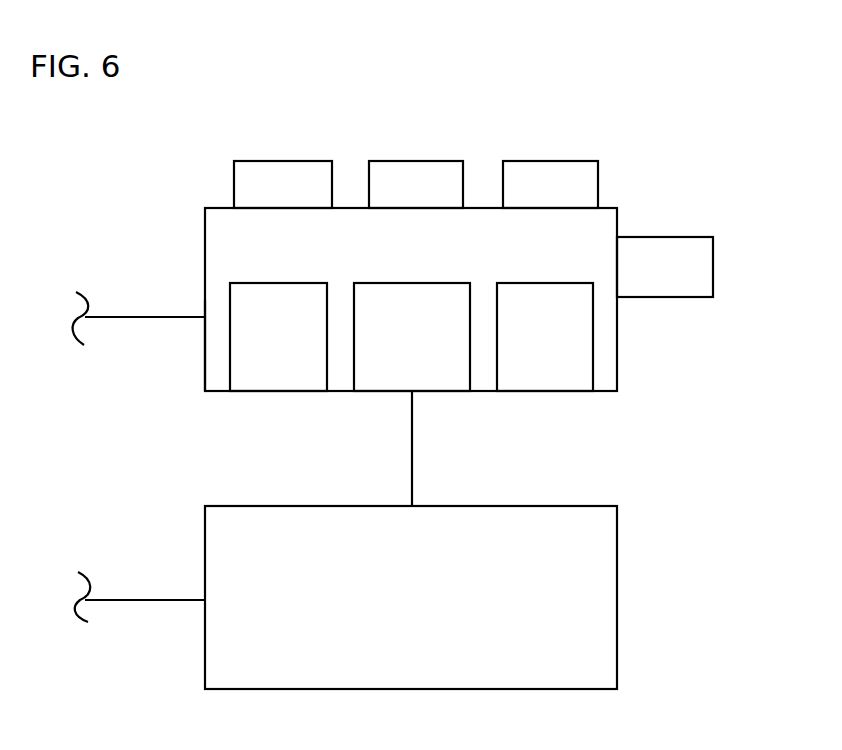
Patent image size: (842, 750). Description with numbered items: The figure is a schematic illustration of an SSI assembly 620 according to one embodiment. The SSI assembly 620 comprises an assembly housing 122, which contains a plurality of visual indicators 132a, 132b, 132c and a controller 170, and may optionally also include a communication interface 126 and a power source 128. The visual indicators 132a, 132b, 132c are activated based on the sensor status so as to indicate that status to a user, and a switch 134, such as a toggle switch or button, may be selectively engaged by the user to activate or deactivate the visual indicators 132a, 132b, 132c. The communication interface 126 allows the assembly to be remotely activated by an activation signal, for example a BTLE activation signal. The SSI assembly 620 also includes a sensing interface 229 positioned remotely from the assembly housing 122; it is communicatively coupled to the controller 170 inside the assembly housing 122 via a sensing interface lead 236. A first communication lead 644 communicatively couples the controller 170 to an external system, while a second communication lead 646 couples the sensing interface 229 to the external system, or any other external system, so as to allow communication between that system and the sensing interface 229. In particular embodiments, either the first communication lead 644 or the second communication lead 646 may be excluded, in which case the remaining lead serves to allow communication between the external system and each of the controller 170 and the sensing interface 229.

The SSI assembly 620 is at (668, 137).
The visual indicator 132a is at (283, 170).
The visual indicator 132b is at (402, 170).
The visual indicator 132c is at (536, 172).
The switch 134 is at (706, 262).
The communication interface 126 is at (412, 302).
The first communication lead 644 is at (132, 317).
The assembly housing 122 is at (205, 341).
The controller 170 is at (275, 383).
The power source 128 is at (568, 370).
The sensing interface lead 236 is at (413, 445).
The sensing interface 229 is at (600, 595).
The second communication lead 646 is at (131, 600).